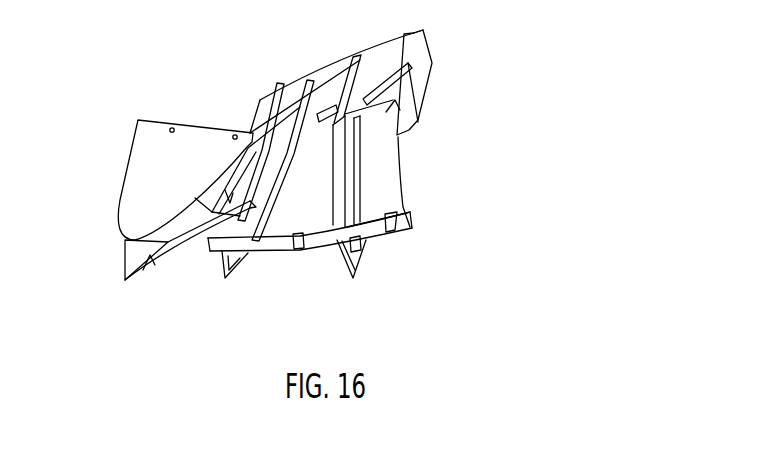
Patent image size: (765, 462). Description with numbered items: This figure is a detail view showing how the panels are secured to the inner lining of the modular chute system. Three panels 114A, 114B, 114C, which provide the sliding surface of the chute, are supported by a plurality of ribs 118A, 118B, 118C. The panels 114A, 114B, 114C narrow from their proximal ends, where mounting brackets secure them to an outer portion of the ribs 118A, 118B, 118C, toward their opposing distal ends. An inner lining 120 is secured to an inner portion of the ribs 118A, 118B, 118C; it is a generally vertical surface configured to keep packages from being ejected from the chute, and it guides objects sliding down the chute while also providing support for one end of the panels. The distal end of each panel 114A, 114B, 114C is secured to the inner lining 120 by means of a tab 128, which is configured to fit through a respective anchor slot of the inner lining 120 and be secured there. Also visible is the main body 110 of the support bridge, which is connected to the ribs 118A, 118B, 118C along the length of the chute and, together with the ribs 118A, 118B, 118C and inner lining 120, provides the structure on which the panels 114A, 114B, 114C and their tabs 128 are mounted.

The main body 110 is at (314, 240).
The panel 114A is at (148, 161).
The panel 114B is at (331, 210).
The panel 114C is at (392, 189).
The rib 118A is at (160, 256).
The rib 118B is at (233, 272).
The rib 118C is at (386, 264).
The inner lining 120 is at (380, 60).
The tab 128 is at (330, 110).